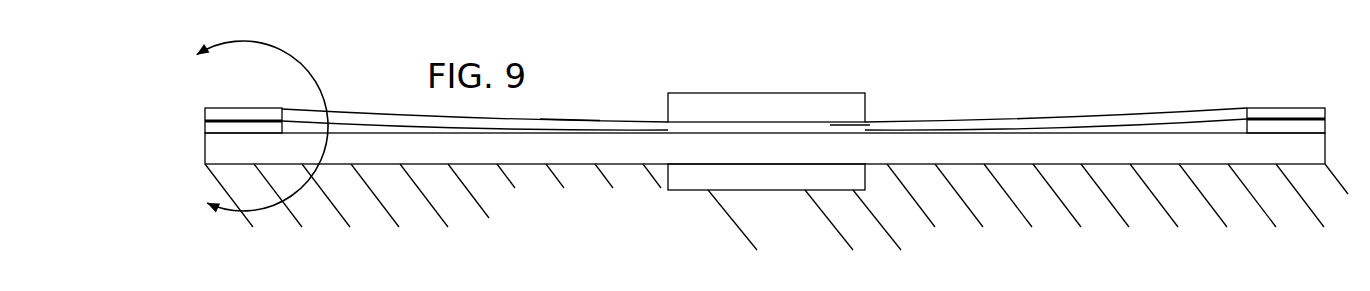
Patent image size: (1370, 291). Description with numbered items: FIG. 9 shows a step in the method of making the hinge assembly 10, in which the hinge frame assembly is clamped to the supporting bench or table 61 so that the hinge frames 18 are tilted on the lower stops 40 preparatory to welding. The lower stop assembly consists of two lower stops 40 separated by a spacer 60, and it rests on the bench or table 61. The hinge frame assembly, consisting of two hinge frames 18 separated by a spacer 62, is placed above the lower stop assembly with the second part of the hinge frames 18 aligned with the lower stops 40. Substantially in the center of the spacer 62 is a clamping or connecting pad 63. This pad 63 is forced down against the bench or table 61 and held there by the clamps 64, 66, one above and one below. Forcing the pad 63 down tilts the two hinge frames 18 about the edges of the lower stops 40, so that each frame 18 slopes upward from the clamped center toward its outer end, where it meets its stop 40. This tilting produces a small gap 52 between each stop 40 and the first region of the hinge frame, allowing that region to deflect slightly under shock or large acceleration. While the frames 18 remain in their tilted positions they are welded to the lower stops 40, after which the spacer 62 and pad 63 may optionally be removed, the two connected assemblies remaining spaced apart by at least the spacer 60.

The membrane assembly 10 is at (143, 102).
The hinge frame 18 is at (233, 113).
The lower stop 40 is at (255, 128).
The gap 52 is at (205, 121).
The spacer 60 is at (347, 128).
The supporting bench or table 61 is at (1128, 152).
The spacer 62 is at (547, 120).
The clamping or connecting pad 63 is at (840, 125).
The clamp 64 is at (803, 108).
The clamp 66 is at (787, 180).